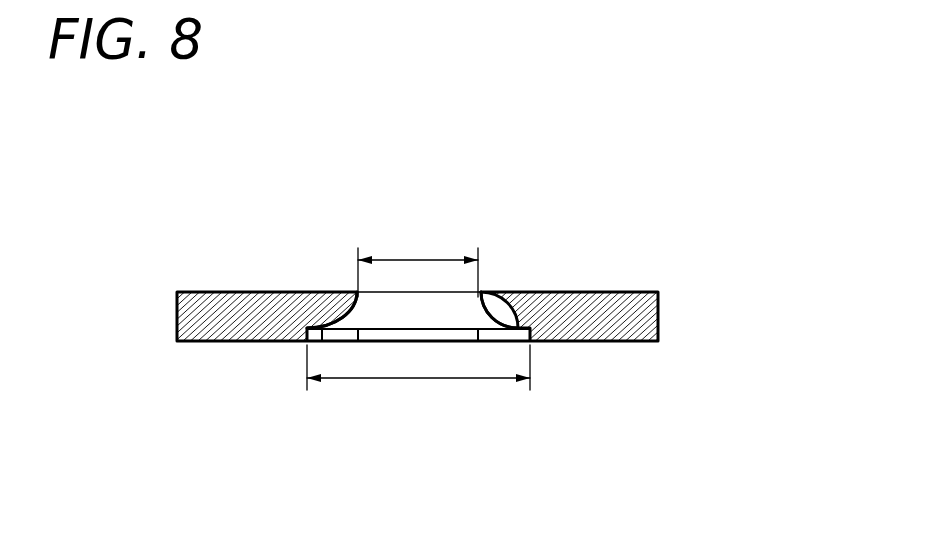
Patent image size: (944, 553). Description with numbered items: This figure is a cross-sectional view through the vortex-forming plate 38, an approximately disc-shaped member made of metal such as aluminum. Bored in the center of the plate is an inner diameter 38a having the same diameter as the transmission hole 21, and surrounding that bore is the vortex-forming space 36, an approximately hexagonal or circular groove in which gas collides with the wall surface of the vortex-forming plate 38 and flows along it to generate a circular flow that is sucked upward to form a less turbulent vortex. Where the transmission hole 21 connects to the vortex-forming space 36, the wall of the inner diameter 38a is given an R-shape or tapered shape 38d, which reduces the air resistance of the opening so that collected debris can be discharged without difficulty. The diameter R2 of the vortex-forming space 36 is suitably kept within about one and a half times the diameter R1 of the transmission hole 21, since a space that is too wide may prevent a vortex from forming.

The transmission hole 21 is at (392, 310).
The vortex-forming space 36 is at (499, 333).
The vortex-forming plate 38 is at (658, 306).
The inner diameter 38a is at (482, 306).
The R-shape or tapered shape 38d is at (352, 300).
The diameter of the transmission hole R1 is at (418, 261).
The diameter of the vortex-forming space R2 is at (418, 379).